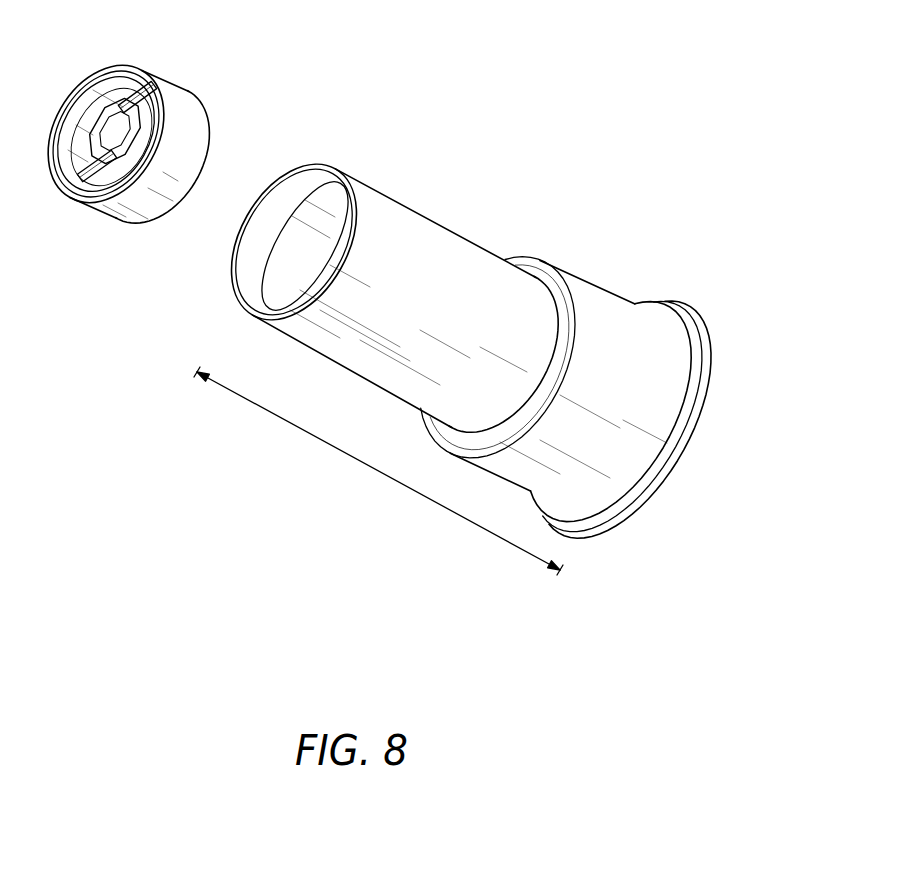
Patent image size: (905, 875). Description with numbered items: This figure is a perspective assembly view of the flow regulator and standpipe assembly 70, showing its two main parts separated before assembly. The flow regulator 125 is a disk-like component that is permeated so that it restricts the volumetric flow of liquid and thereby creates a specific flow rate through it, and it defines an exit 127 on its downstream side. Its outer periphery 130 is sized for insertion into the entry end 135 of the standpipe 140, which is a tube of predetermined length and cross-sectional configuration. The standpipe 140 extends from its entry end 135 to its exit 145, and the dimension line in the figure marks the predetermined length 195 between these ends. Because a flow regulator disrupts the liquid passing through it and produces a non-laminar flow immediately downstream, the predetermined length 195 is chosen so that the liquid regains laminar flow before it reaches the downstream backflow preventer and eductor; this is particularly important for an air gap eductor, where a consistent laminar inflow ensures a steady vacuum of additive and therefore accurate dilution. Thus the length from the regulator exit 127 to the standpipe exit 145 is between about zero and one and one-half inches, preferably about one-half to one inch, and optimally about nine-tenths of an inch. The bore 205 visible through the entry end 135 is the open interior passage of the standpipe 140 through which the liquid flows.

The flow regulator and standpipe assembly 70 is at (188, 462).
The flow regulator 125 is at (165, 153).
The exit 127 is at (208, 155).
The outer periphery 130 is at (142, 213).
The entry end 135 is at (320, 188).
The standpipe 140 is at (492, 322).
The exit 145 is at (688, 408).
The predetermined length 195 is at (340, 454).
The bore 205 is at (318, 257).